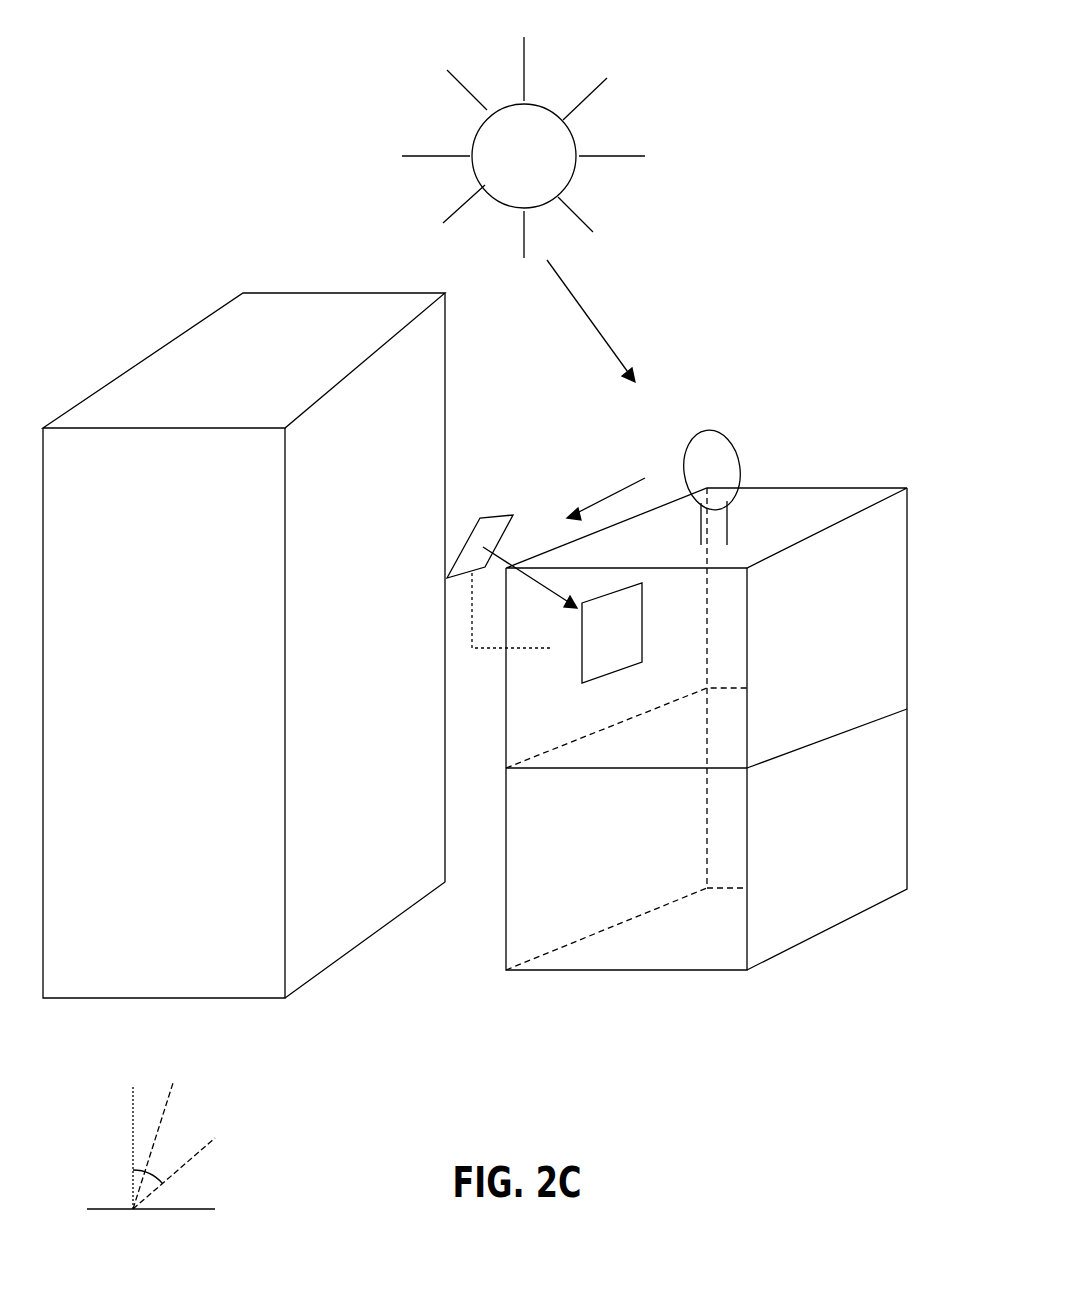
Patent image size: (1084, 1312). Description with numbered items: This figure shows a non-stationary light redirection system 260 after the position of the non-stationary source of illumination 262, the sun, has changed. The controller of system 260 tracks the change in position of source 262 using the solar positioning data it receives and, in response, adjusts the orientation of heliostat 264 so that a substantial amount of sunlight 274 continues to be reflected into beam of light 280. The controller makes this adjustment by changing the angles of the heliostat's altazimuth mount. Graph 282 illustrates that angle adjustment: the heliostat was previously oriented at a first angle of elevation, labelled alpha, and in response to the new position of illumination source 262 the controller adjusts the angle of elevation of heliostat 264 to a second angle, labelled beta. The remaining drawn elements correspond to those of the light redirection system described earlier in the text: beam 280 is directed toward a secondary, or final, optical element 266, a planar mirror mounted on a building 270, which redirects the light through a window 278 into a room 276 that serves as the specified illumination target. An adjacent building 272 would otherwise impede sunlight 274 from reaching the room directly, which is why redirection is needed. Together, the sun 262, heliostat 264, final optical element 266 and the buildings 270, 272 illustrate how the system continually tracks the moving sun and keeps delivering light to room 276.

The light redirection system 260 is at (274, 114).
The non-stationary source of illumination 262 is at (570, 182).
The heliostat 264 is at (740, 475).
The heliostat mirror 266 is at (462, 542).
The target building 270 is at (890, 633).
The adjacent building 272 is at (338, 303).
The incident sunlight ray 274 is at (578, 302).
The floor of building 276 is at (535, 717).
The window 278 is at (608, 607).
The beam of light 280 is at (592, 498).
The graph 282 is at (232, 1169).